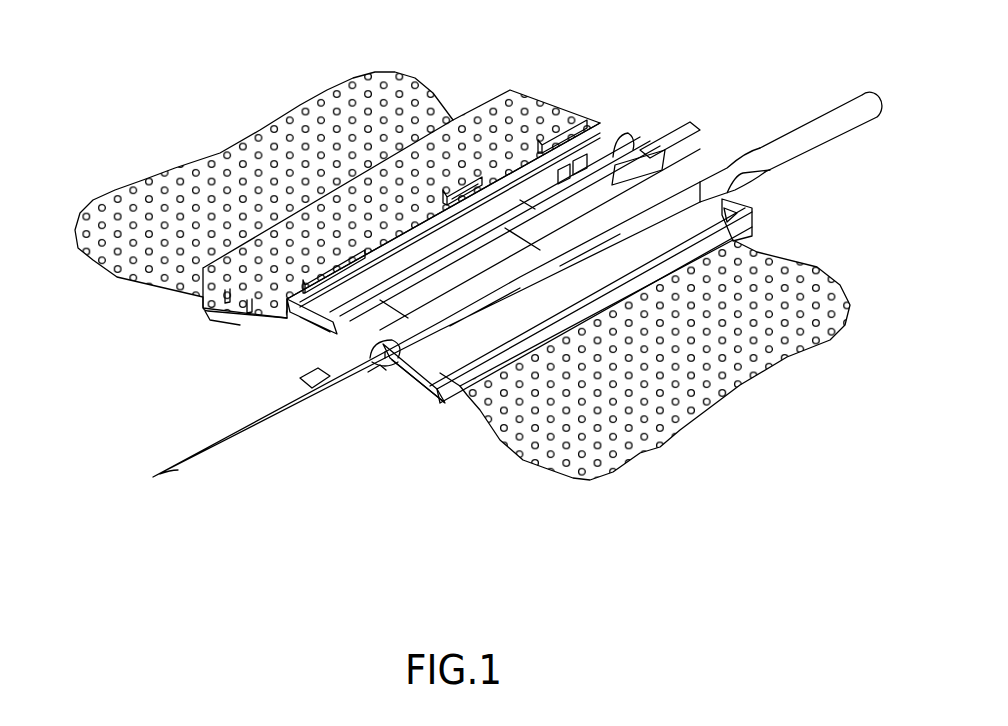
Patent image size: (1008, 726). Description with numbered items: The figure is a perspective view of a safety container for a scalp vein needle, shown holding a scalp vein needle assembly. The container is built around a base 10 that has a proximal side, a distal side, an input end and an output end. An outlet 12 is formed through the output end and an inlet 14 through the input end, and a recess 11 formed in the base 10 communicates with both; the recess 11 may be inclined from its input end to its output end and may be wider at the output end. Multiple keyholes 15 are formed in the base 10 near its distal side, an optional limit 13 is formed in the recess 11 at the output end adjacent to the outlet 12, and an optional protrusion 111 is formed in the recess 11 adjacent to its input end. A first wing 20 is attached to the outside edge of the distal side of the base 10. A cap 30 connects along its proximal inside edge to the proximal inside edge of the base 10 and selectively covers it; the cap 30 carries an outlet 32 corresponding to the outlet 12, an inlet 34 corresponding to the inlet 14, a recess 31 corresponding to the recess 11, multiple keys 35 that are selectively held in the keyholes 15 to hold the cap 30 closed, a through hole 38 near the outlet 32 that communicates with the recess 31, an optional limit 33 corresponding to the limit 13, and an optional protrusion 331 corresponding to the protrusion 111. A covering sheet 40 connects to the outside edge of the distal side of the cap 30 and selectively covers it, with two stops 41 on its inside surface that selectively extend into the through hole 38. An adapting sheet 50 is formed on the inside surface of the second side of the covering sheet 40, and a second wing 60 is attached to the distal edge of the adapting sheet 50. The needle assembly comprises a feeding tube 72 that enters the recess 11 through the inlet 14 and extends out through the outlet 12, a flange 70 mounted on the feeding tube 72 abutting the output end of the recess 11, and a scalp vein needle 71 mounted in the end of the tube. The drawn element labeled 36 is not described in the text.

The base 10 is at (447, 383).
The recess 11 is at (448, 352).
The outlet 12 is at (384, 372).
The limit 13 is at (440, 352).
The inlet 14 is at (720, 203).
The keyholes 15 is at (747, 227).
The protrusion 111 is at (738, 207).
The first wing 20 is at (567, 462).
The cap 30 is at (317, 333).
The recess 31 is at (528, 190).
The outlet 32 is at (320, 333).
The limit 33 is at (305, 385).
The protrusion 331 is at (598, 124).
The inlet 34 is at (653, 137).
The keys 35 is at (593, 167).
The clip 36 is at (463, 200).
The through hole 38 is at (377, 372).
The covering sheet 40 is at (280, 310).
The stops 41 is at (258, 306).
The adapting sheet 50 is at (210, 322).
The second wing 60 is at (163, 277).
The flange 70 is at (393, 333).
The scalp vein needle 71 is at (230, 442).
The feeding tube 72 is at (792, 148).